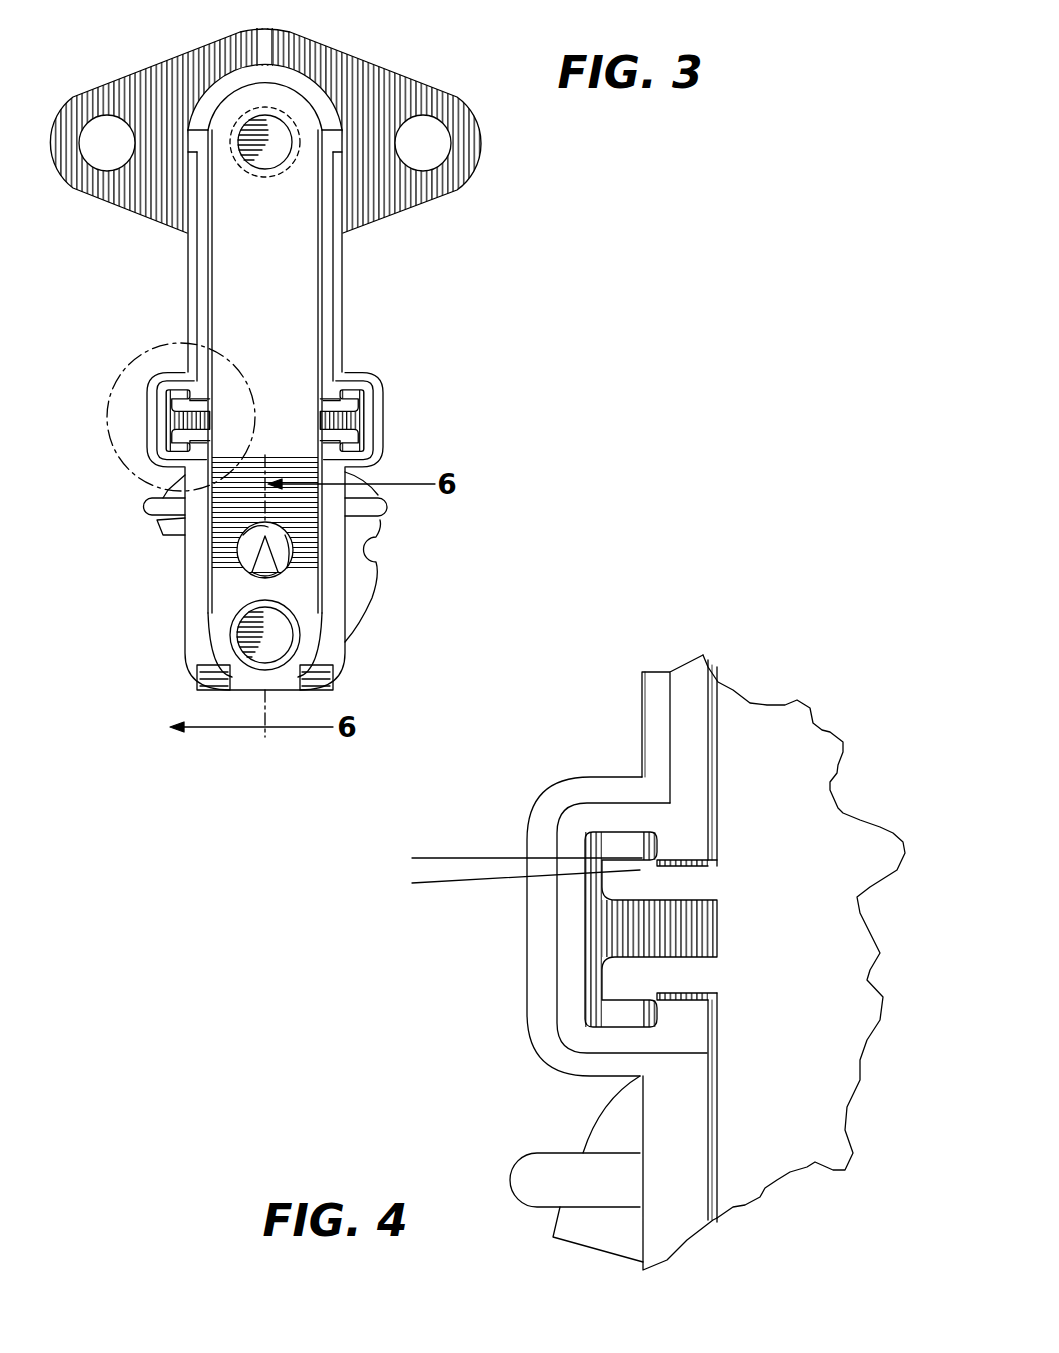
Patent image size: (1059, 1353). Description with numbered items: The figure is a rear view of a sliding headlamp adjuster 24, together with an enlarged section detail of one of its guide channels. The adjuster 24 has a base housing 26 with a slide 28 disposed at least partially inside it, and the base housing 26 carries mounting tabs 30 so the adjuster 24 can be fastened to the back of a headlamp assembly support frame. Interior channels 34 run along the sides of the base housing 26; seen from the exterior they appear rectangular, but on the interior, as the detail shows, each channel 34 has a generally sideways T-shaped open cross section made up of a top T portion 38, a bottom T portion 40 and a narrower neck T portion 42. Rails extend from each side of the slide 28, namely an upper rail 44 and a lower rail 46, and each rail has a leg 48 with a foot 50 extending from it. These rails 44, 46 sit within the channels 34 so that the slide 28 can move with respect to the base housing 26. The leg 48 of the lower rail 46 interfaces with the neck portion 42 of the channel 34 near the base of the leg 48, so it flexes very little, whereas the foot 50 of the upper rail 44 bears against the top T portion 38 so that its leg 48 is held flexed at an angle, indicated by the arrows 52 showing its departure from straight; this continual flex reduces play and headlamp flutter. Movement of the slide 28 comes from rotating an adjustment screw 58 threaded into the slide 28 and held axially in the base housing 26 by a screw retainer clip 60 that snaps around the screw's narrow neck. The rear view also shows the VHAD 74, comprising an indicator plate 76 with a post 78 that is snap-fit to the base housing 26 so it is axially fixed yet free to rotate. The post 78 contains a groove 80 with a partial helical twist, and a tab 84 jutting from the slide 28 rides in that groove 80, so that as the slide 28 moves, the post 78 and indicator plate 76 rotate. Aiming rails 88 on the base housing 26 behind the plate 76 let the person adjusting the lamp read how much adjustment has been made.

In FIG. 3, the sliding headlamp adjuster 24 is at (118, 227).
In FIG. 3, the base housing 26 is at (356, 253).
In FIG. 3, the slide 28 is at (298, 303).
In FIG. 3, the mounting tabs 30 is at (202, 62).
In FIG. 3, the interior channels 34 is at (383, 388).
In FIG. 4, the interior channels 34 is at (585, 796).
In FIG. 4, the top T portion 38 is at (620, 847).
In FIG. 4, the bottom T portion 40 is at (590, 1012).
In FIG. 4, the neck T portion 42 is at (690, 843).
In FIG. 4, the upper rail 44 is at (576, 848).
In FIG. 4, the lower rail 46 is at (610, 962).
In FIG. 4, the leg 48 is at (690, 885).
In FIG. 4, the foot 50 is at (600, 818).
In FIG. 3, the arrows 52 is at (278, 150).
In FIG. 4, the arrows 52 is at (433, 850).
In FIG. 3, the adjustment screw 58 is at (277, 635).
In FIG. 3, the screw retainer clip 60 is at (318, 681).
In FIG. 3, the VHAD 74 is at (275, 581).
In FIG. 3, the indicator plate 76 is at (362, 574).
In FIG. 3, the post 78 is at (245, 541).
In FIG. 3, the groove 80 is at (250, 563).
In FIG. 3, the tab 84 is at (267, 573).
In FIG. 3, the aiming rails 88 is at (152, 505).